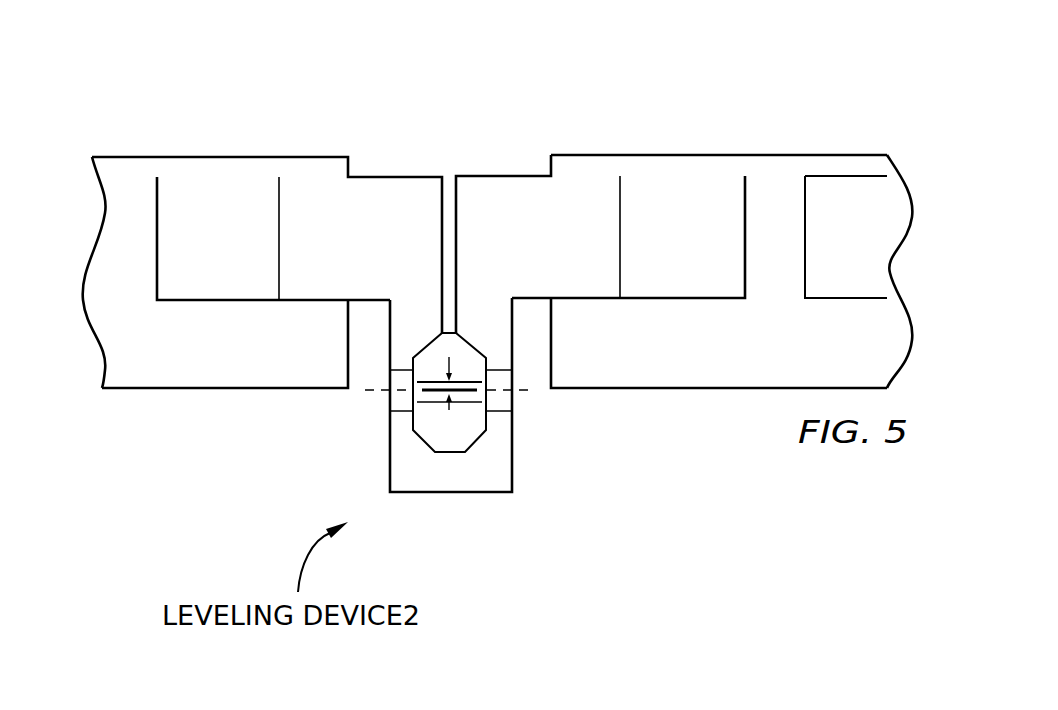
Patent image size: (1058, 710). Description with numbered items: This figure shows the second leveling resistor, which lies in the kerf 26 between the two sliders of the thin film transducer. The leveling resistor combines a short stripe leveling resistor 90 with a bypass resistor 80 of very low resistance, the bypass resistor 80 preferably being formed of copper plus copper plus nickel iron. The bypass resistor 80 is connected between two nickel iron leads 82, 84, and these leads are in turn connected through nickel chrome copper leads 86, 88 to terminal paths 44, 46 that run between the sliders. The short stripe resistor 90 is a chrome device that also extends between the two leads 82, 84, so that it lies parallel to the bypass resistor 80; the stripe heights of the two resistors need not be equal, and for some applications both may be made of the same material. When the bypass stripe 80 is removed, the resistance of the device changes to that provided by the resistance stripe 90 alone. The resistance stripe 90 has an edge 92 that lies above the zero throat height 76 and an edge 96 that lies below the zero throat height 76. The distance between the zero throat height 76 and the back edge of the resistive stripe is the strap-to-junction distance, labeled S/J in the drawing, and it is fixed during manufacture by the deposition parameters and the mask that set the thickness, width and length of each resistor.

The kerf 26 is at (537, 138).
The terminal path 44 is at (670, 202).
The terminal path 46 is at (217, 200).
The zero throat height 76 is at (533, 390).
The bypass resistor 80 is at (413, 495).
The nickel iron lead 82 is at (397, 398).
The nickel iron lead 84 is at (502, 398).
The nickel chrome copper lead 86 is at (397, 193).
The nickel chrome copper lead 88 is at (478, 193).
The short stripe leveling resistor 90 is at (430, 398).
The edge 92 is at (475, 405).
The edge 96 is at (438, 382).